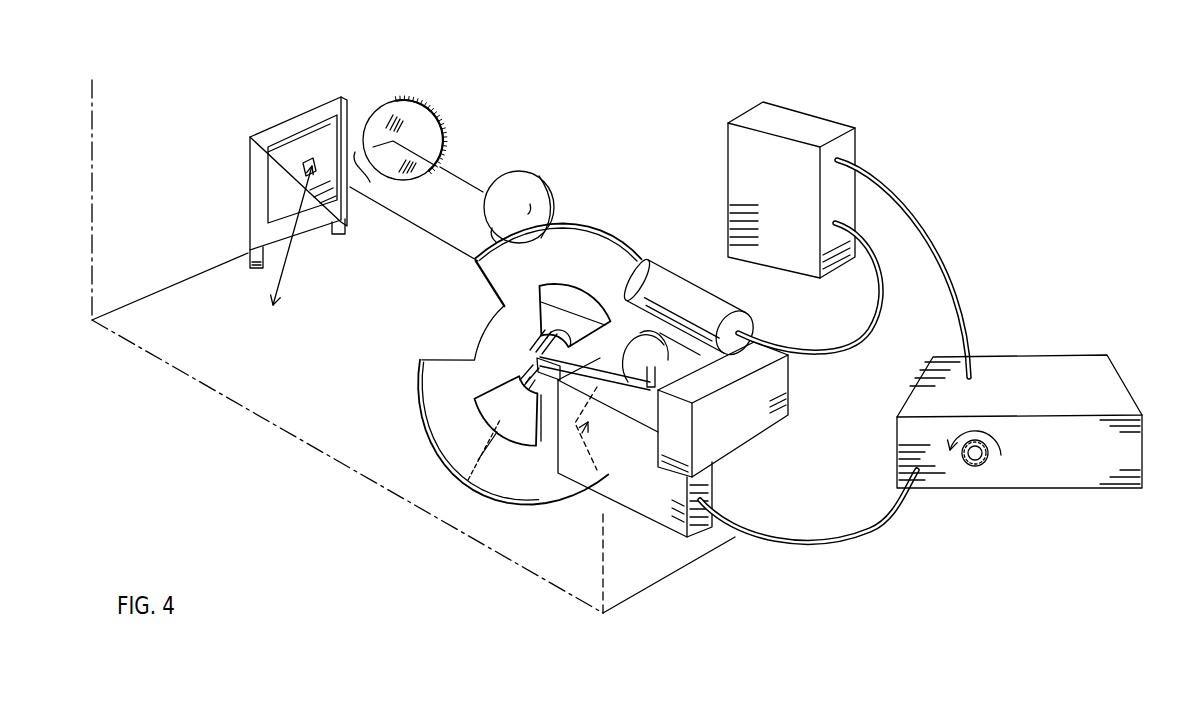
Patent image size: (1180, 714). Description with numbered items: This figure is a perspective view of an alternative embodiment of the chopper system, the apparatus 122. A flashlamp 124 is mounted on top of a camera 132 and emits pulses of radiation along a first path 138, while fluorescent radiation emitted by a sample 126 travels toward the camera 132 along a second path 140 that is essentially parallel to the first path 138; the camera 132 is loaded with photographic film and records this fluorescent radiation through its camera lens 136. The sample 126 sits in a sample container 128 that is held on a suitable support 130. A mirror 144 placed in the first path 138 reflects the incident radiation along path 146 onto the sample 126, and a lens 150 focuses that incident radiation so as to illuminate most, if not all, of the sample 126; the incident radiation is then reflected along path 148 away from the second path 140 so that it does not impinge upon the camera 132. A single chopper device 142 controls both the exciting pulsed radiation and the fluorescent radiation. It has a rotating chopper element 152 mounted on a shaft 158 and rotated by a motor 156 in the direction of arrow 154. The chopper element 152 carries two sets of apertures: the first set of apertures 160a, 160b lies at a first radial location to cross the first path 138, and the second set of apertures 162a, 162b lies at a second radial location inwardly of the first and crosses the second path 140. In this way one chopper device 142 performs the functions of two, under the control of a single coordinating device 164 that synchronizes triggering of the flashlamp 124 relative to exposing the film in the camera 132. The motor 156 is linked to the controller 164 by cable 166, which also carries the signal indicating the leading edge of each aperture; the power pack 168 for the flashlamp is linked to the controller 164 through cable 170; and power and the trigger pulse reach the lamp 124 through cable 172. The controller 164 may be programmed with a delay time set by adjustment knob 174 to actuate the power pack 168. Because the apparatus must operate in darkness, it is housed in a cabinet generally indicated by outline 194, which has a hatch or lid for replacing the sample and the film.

The apparatus 122 is at (601, 165).
The flashlamp 124 is at (695, 300).
The sample 126 is at (307, 177).
The sample container 128 is at (343, 124).
The support 130 is at (347, 223).
The camera 132 is at (771, 416).
The camera lens 136 is at (647, 371).
The first path 138 is at (586, 248).
The second path 140 is at (455, 256).
The chopper device 142 is at (393, 420).
The mirror 144 is at (425, 133).
The path of incident radiation 146 is at (378, 177).
The path of reflected radiation 148 is at (279, 284).
The lens 150 is at (528, 175).
The rotating chopper element 152 is at (477, 468).
The arrow 154 is at (395, 393).
The motor 156 is at (660, 508).
The shaft 158 is at (563, 350).
The first aperture of first set 160a is at (489, 309).
The second aperture of first set 160b is at (587, 473).
The first aperture of second set 162a is at (500, 418).
The second aperture of second set 162b is at (583, 307).
The coordinating device 164 is at (1070, 362).
The cable 166 is at (871, 537).
The power pack 168 is at (845, 144).
The cable 170 is at (939, 241).
The cable 172 is at (874, 273).
The adjustment knob 174 is at (993, 460).
The outline of cabinet 194 is at (175, 368).